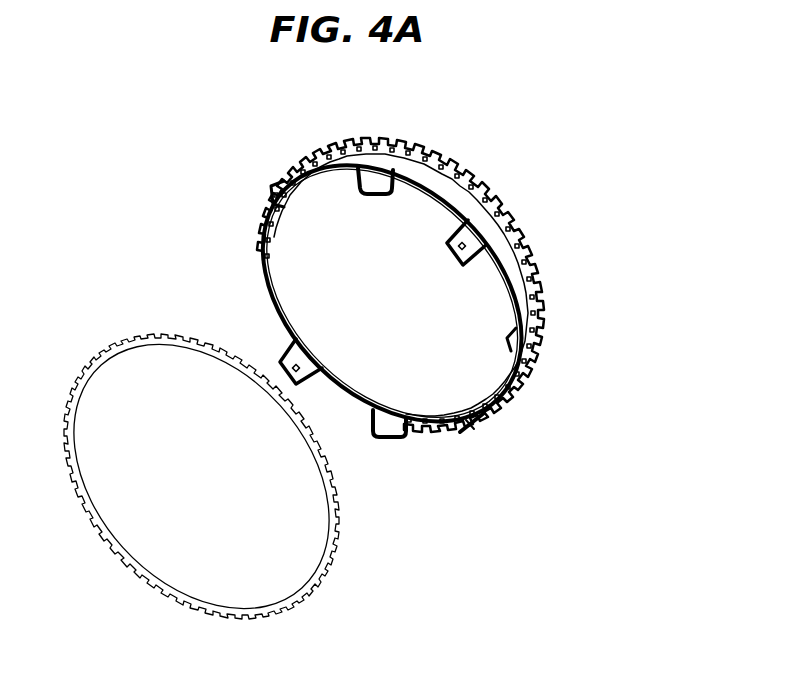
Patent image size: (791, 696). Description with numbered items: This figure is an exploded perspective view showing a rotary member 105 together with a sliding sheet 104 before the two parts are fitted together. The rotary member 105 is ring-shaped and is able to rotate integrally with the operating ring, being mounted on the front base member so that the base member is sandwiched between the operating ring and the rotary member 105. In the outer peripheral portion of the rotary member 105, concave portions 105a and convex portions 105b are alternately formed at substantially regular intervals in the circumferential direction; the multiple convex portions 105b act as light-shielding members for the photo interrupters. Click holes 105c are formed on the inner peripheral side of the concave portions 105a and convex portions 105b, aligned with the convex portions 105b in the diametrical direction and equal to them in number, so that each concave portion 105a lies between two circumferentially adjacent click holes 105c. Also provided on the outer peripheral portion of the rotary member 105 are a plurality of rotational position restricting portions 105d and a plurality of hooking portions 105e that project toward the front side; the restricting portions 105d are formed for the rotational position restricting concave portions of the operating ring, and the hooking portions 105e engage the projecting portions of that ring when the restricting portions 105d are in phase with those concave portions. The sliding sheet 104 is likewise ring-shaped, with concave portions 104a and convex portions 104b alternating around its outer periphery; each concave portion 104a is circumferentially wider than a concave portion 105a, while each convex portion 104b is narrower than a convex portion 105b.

The sliding sheet 104 is at (231, 476).
The concave portion 104a is at (340, 518).
The convex portion 104b is at (340, 511).
The rotary member 105 is at (411, 285).
The concave portion 105a is at (520, 296).
The convex portion 105b is at (531, 285).
The click hole 105c is at (560, 248).
The rotational position restricting portion 105d is at (381, 185).
The hooking portion 105e is at (274, 190).